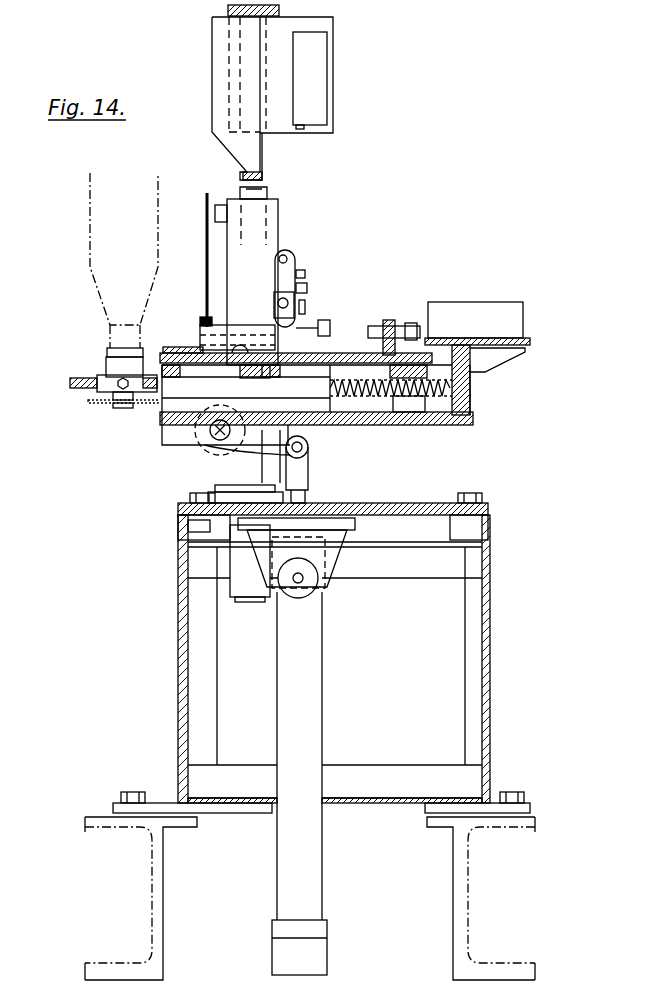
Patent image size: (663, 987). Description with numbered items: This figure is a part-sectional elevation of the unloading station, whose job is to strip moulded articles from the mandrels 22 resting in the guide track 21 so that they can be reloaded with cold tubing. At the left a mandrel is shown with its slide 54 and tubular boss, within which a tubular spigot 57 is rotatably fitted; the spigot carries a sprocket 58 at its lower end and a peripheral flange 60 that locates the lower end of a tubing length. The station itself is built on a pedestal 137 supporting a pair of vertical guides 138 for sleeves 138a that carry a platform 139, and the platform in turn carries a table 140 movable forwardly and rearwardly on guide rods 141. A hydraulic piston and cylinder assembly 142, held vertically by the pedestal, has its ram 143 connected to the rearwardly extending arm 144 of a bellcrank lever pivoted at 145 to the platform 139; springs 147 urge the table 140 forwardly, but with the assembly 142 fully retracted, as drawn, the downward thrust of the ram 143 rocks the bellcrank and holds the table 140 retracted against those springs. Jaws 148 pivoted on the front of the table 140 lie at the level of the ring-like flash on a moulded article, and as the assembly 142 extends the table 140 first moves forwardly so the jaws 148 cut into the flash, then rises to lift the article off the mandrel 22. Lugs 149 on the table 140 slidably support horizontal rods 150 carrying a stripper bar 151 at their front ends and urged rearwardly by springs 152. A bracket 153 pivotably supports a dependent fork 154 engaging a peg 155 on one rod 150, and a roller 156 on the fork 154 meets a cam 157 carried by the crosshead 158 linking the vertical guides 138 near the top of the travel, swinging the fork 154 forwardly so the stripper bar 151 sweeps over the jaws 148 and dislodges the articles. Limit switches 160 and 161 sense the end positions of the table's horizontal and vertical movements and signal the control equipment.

The crosshead 158 is at (229, 17).
The limit switch 161 is at (296, 56).
The cam 157 is at (228, 152).
The vertical guide 138 is at (266, 176).
The sleeve 138a is at (280, 206).
The bracket 153 is at (296, 250).
The dependent fork 154 is at (306, 300).
The horizontal rod 150 is at (327, 322).
The spring 152 is at (335, 377).
The table 140 is at (340, 355).
The limit switch 160 is at (463, 322).
The lug 149 is at (222, 322).
The roller 156 is at (275, 303).
The stripper bar 151 is at (201, 320).
The jaw 148 is at (195, 348).
The peripheral flange 60 is at (110, 352).
The mandrel 22 is at (98, 366).
The guide track 21 is at (74, 380).
The slide 54 is at (98, 385).
The sprocket 58 is at (90, 402).
The tubular spigot 57 is at (117, 407).
The guide rod 141 is at (205, 388).
The bellcrank lever pivot 145 is at (248, 372).
The rearwardly extending arm 144 is at (270, 450).
The ram 143 is at (292, 460).
The peg 155 is at (277, 377).
The spring 147 is at (392, 400).
The platform 139 is at (397, 427).
The pedestal 137 is at (491, 554).
The hydraulic piston and cylinder assembly 142 is at (293, 661).